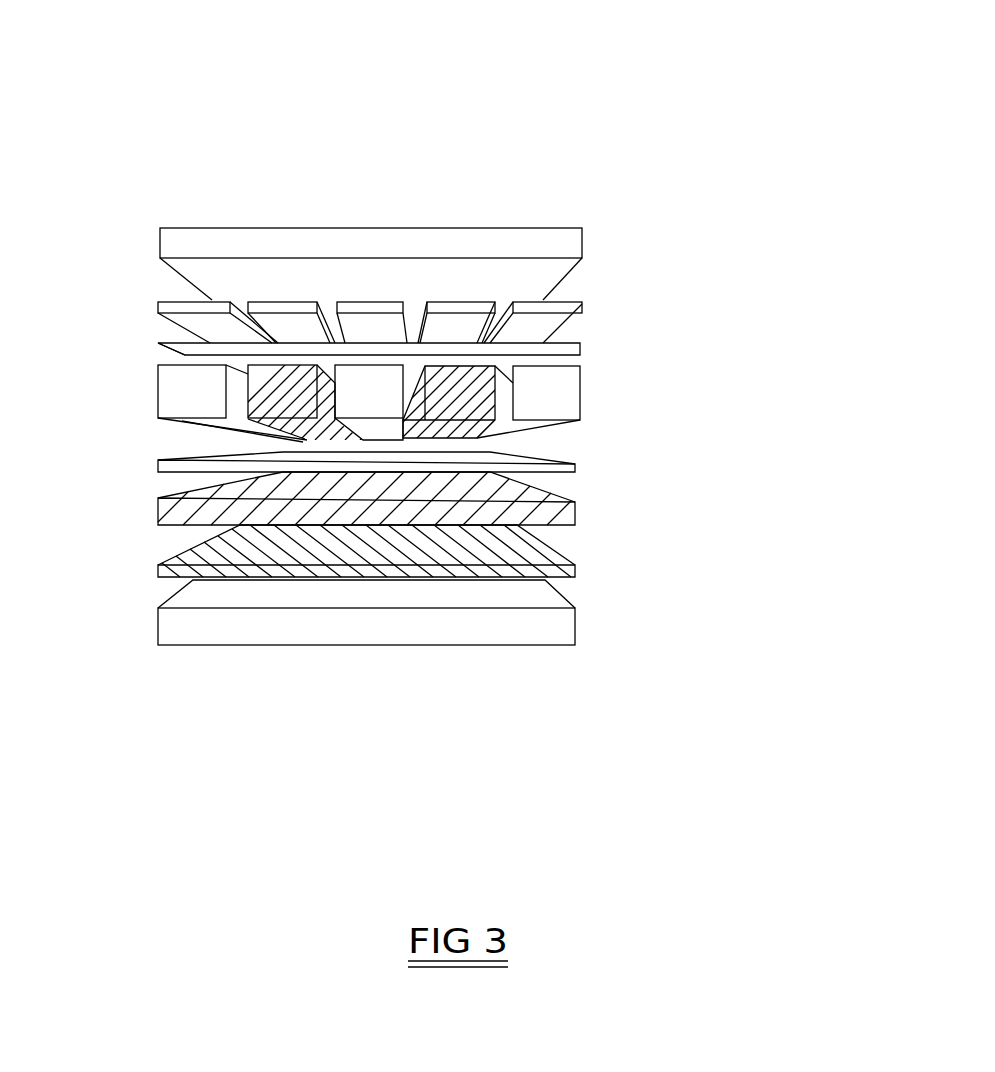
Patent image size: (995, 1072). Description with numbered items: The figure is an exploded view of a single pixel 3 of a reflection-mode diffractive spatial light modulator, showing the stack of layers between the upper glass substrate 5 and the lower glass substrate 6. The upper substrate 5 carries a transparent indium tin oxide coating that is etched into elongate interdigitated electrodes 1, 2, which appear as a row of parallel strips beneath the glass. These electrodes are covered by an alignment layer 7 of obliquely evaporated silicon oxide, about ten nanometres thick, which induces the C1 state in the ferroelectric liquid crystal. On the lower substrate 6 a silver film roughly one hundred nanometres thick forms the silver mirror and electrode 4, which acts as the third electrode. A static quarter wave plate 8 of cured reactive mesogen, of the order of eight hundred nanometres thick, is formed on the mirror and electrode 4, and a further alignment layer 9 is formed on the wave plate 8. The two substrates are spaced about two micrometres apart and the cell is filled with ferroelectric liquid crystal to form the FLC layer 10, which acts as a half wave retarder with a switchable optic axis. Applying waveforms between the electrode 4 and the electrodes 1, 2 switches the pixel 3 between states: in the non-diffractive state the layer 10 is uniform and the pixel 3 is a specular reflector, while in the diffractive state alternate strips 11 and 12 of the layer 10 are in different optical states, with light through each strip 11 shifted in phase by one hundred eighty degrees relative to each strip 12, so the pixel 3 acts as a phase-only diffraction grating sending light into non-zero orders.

The interdigitated electrode 1 is at (160, 287).
The interdigitated electrode 2 is at (371, 322).
The pixel 3 is at (556, 169).
The silver mirror and electrode 4 is at (572, 558).
The upper glass substrate 5 is at (323, 242).
The lower glass substrate 6 is at (412, 628).
The alignment layer 7 is at (578, 348).
The static quarter wave plate 8 is at (577, 518).
The alignment layer 9 is at (578, 470).
The ferroelectric liquid crystal layer 10 is at (458, 370).
The strip of FLC layer 11 is at (355, 390).
The strip of FLC layer 12 is at (513, 397).